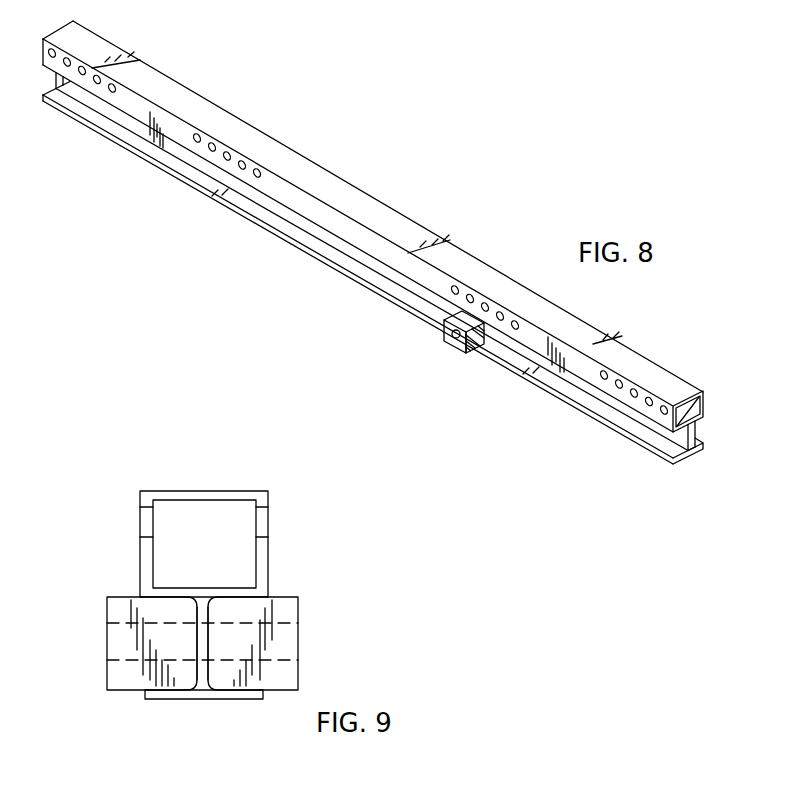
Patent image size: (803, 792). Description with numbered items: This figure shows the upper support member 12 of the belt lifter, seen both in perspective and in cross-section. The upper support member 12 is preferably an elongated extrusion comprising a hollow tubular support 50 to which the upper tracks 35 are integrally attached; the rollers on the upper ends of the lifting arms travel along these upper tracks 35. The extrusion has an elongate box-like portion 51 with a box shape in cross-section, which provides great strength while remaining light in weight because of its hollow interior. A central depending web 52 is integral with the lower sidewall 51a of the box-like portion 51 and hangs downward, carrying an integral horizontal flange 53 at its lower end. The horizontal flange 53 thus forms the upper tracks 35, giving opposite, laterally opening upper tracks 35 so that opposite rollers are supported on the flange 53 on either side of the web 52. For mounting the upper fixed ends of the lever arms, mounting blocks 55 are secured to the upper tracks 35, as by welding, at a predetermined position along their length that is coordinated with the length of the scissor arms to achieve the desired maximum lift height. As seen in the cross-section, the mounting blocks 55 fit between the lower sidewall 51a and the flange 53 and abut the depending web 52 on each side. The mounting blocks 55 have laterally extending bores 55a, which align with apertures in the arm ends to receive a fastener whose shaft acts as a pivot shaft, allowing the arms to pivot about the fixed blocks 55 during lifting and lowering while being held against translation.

In FIG. 8, the upper support member 12 is at (394, 200).
In FIG. 8, the upper tracks 35 is at (618, 428).
In FIG. 8, the hollow tubular support 50 is at (521, 285).
In FIG. 9, the hollow tubular support 50 is at (210, 491).
In FIG. 8, the box-like portion 51 is at (712, 388).
In FIG. 9, the box-like portion 51 is at (268, 554).
In FIG. 8, the lower sidewall 51a is at (703, 423).
In FIG. 8, the central depending web 52 is at (662, 456).
In FIG. 9, the central depending web 52 is at (202, 633).
In FIG. 8, the horizontal flange 53 is at (680, 466).
In FIG. 9, the horizontal flange 53 is at (236, 698).
In FIG. 8, the mounting blocks 55 is at (490, 343).
In FIG. 9, the mounting blocks 55 is at (112, 605).
In FIG. 8, the laterally extending bores 55a is at (451, 334).
In FIG. 9, the laterally extending bores 55a is at (276, 623).